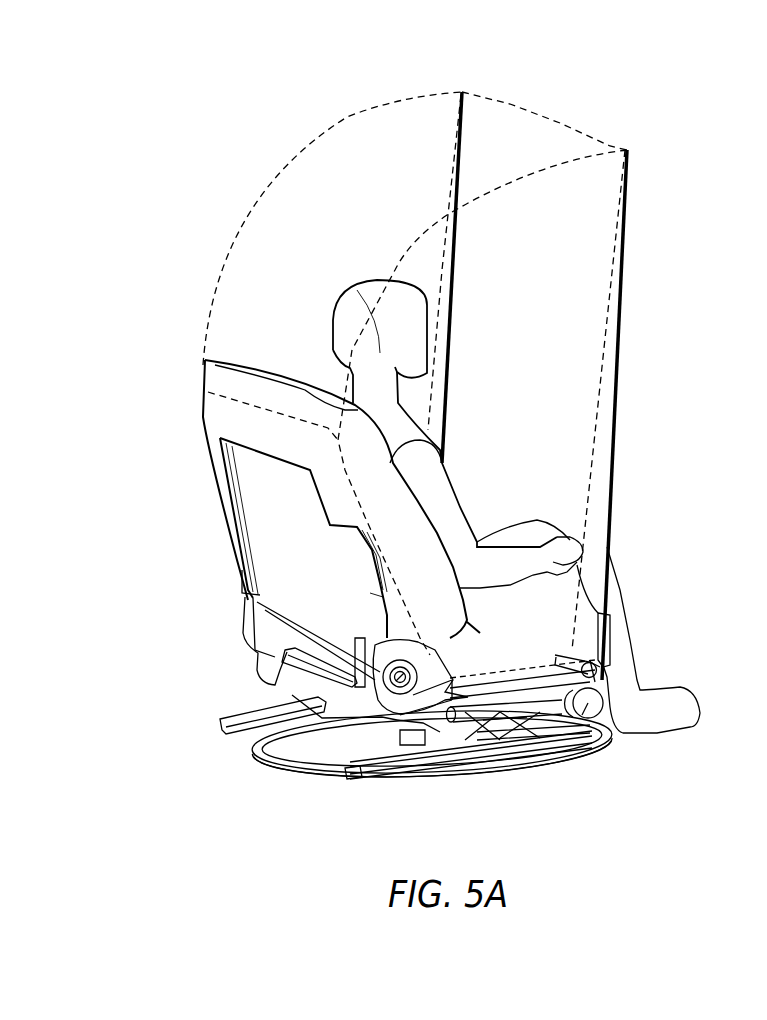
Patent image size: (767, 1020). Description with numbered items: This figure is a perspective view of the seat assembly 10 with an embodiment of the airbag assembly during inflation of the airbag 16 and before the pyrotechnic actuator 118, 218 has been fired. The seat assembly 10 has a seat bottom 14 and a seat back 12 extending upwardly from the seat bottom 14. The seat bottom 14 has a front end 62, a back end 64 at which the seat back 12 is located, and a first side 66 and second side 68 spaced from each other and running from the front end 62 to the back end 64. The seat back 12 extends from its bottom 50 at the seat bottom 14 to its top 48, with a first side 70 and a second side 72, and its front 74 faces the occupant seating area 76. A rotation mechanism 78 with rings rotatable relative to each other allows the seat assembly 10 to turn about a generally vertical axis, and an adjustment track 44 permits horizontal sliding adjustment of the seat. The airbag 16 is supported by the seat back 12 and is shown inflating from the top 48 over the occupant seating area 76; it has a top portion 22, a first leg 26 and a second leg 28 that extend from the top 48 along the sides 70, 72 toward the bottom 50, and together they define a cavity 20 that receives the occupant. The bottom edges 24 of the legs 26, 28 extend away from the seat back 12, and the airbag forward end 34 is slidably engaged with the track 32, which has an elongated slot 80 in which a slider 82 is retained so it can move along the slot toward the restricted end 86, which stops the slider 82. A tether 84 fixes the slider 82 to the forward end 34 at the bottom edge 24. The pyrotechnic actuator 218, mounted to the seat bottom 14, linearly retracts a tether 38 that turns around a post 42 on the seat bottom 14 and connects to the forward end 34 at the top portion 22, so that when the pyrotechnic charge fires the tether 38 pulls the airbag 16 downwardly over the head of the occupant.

The seat assembly 10 is at (165, 495).
The seat back 12 is at (292, 492).
The seat bottom 14 is at (423, 723).
The airbag 16 is at (257, 197).
The cavity 20 is at (657, 172).
The top portion 22 is at (363, 160).
The bottom edges 24 is at (537, 667).
The first leg 26 is at (570, 263).
The second leg 28 is at (462, 157).
The track 32 is at (507, 720).
The forward end 34 is at (617, 647).
The tether 38 is at (628, 372).
The post 42 is at (598, 712).
The adjustment track 44 is at (222, 725).
The top 48 is at (272, 352).
The bottom 50 is at (427, 653).
The front end 62 is at (602, 663).
The back end 64 is at (578, 650).
The first side 66 is at (408, 742).
The second side 68 is at (236, 656).
The first side 70 is at (385, 590).
The second side 72 is at (215, 565).
The front 74 is at (397, 460).
The occupant seating area 76 is at (293, 415).
The rotation mechanism 78 is at (244, 768).
The elongated slot 80 is at (522, 722).
The slider 82 is at (597, 672).
The tether 84 is at (563, 740).
The restricted end 86 is at (600, 670).
The pyrotechnic actuator 118 is at (590, 708).
The pyrotechnic actuator 218 is at (527, 730).